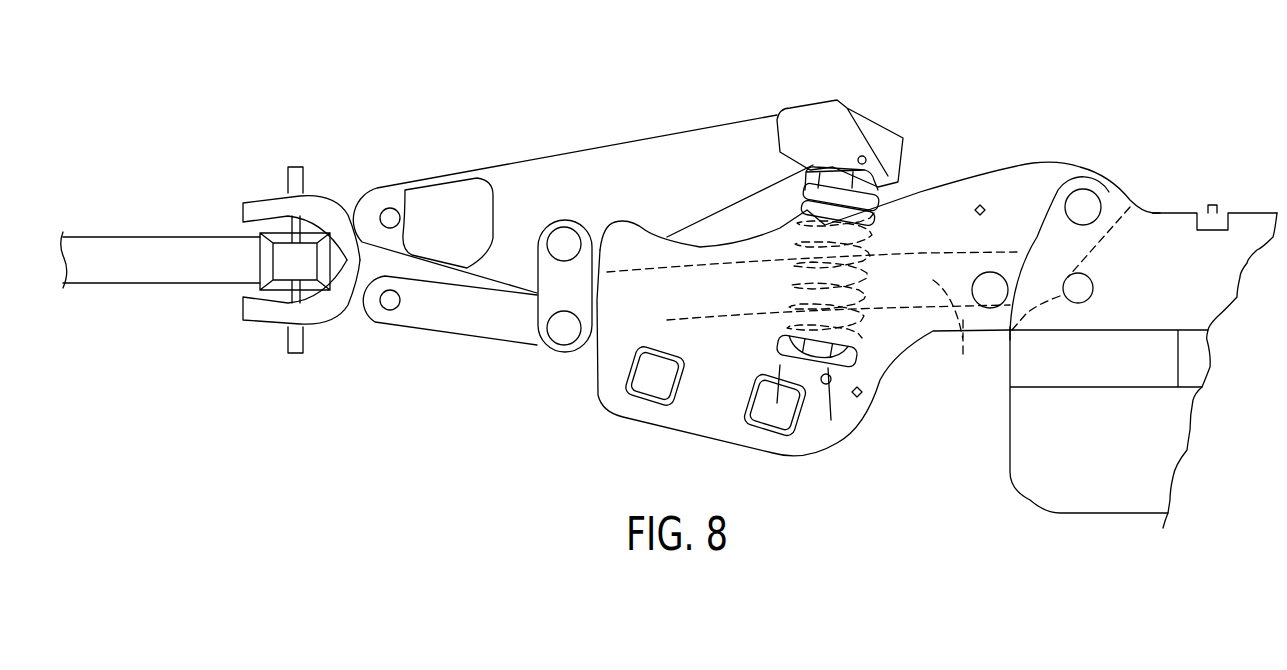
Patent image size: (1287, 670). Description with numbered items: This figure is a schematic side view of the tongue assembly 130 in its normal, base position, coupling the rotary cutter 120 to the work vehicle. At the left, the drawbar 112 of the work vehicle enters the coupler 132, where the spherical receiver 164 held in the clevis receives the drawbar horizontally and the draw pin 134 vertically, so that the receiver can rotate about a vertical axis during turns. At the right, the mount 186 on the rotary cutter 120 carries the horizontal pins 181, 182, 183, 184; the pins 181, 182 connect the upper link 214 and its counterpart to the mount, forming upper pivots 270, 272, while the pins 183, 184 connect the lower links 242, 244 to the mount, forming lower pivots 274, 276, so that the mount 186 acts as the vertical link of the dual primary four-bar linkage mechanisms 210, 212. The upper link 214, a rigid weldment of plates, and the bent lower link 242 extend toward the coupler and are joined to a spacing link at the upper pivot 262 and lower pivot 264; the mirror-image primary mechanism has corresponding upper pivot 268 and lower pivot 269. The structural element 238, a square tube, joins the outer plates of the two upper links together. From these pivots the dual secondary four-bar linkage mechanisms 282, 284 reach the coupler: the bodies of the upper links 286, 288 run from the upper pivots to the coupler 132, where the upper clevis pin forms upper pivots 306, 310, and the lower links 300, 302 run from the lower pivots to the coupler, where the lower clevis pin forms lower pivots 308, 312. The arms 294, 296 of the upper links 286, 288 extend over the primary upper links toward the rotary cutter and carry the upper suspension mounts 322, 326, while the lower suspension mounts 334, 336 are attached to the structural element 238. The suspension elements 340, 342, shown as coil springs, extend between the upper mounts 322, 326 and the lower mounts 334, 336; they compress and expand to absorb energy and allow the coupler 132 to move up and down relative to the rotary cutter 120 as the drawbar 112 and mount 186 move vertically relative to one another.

The drawbar 112 is at (165, 237).
The rotary cutter 120 is at (1143, 316).
The tongue assembly 130 is at (616, 112).
The coupler 132 is at (262, 263).
The draw pin 134 is at (292, 168).
The spherical receiver 164 is at (272, 292).
The pin 181 is at (1095, 154).
The pin 182 is at (1066, 200).
The pin 183 is at (1145, 290).
The pin 184 is at (1078, 288).
The mount 186 is at (1150, 208).
The primary linkage mechanism 210 is at (875, 327).
The primary linkage mechanism 212 is at (875, 327).
The upper link 214 is at (1084, 258).
The structural element 238 is at (768, 408).
The lower link 242 is at (960, 333).
The lower link 244 is at (960, 333).
The upper pivot 262 is at (613, 203).
The lower pivot 264 is at (580, 379).
The upper pivot 268 is at (560, 238).
The lower pivot 269 is at (565, 332).
The upper pivot 270 is at (1095, 154).
The upper pivot 272 is at (1095, 154).
The lower pivot 274 is at (1073, 367).
The lower pivot 276 is at (1072, 302).
The secondary linkage mechanism 282 is at (416, 355).
The secondary linkage mechanism 284 is at (416, 355).
The upper link 286 is at (583, 188).
The upper link 288 is at (583, 188).
The arm 294 is at (863, 124).
The arm 296 is at (885, 150).
The lower link 300 is at (570, 296).
The lower link 302 is at (570, 296).
The upper pivot 306 is at (395, 170).
The lower pivot 308 is at (348, 342).
The upper pivot 310 is at (386, 214).
The lower pivot 312 is at (386, 304).
The upper suspension mount 322 is at (841, 126).
The upper suspension mount 326 is at (830, 172).
The lower suspension mount 334 is at (865, 419).
The lower suspension mount 336 is at (828, 392).
The suspension element 340 is at (798, 189).
The suspension element 342 is at (812, 232).